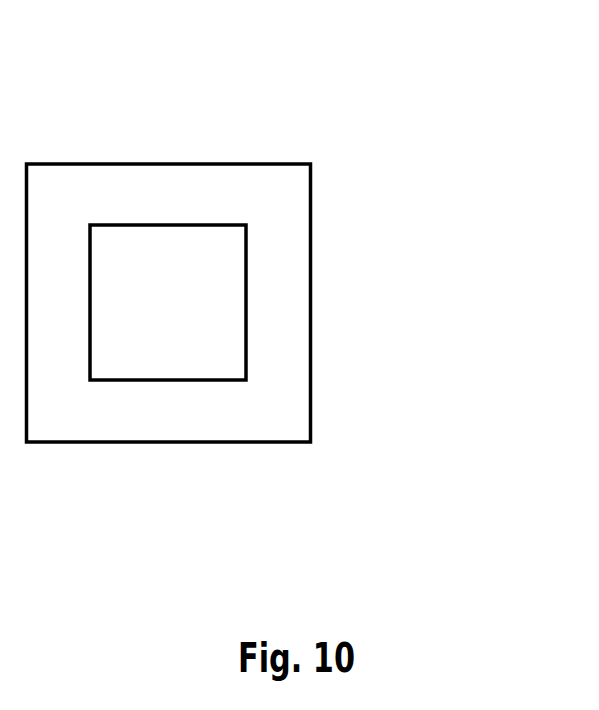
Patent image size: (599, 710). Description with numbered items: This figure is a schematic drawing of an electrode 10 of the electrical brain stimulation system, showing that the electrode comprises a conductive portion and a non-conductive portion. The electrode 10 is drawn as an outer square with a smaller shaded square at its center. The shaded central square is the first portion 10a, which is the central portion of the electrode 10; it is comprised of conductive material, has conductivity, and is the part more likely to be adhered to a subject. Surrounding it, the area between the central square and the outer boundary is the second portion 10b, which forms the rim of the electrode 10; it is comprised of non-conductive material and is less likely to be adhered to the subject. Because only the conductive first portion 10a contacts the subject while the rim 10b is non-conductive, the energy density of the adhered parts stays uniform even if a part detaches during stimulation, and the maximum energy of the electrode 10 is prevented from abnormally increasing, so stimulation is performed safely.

The electrode 10 is at (214, 131).
The first portion 10a is at (164, 338).
The second portion 10b is at (277, 293).